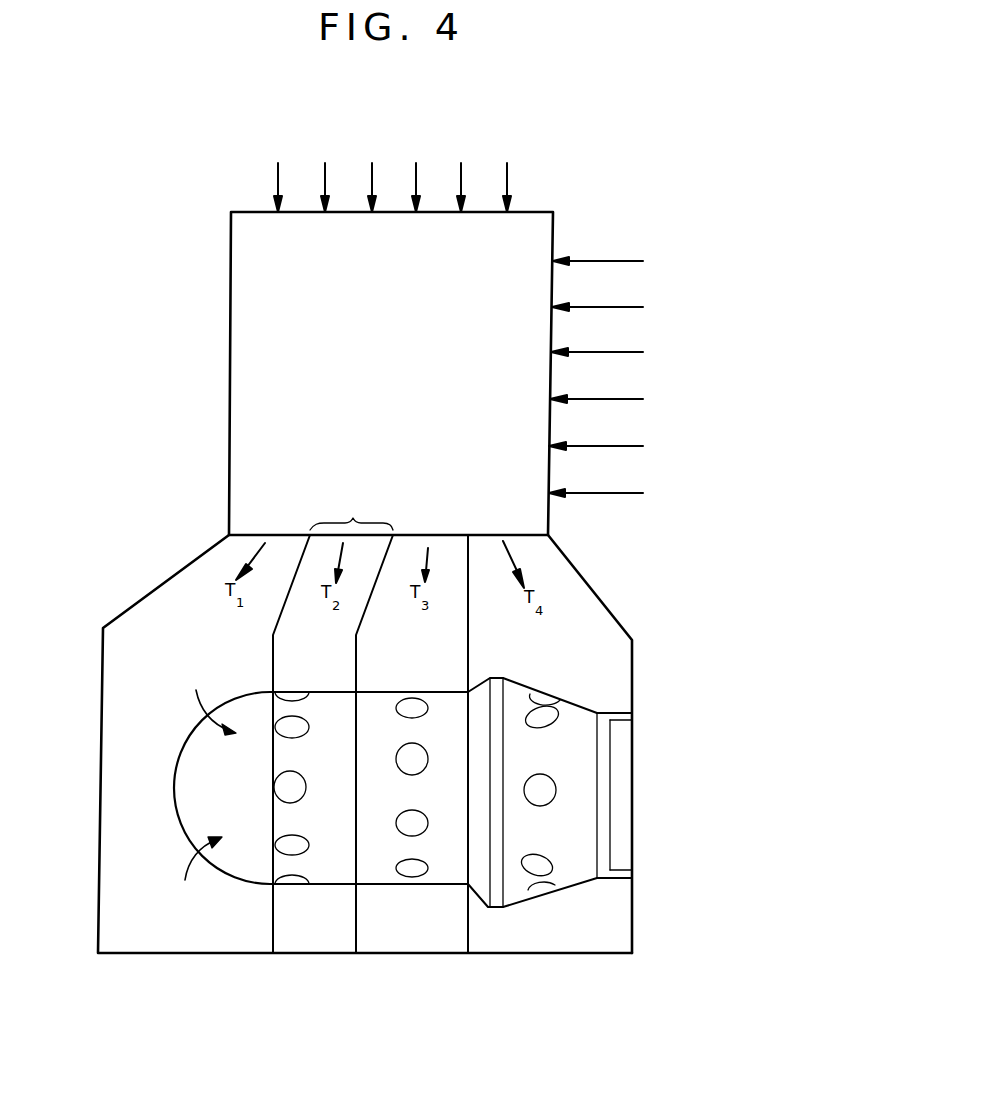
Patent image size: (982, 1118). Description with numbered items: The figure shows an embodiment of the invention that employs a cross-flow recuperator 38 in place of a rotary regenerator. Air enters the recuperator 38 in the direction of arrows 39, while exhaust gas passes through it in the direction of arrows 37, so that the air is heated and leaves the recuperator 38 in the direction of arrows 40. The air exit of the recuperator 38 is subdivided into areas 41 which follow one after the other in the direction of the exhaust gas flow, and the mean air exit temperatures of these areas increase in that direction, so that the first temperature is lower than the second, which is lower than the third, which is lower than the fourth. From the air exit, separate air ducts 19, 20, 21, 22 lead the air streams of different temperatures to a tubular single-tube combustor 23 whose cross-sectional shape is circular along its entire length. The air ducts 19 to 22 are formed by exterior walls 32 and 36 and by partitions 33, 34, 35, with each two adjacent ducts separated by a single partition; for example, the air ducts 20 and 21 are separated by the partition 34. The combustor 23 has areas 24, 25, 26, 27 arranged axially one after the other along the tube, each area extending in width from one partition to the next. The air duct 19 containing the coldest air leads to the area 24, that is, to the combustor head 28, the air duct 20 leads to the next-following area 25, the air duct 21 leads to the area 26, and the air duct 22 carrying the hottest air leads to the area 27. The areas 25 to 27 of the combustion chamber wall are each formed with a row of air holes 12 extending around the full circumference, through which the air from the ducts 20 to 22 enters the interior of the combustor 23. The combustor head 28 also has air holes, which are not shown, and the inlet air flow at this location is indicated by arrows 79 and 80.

The air holes 12 is at (290, 790).
The air duct 19 is at (208, 637).
The air duct 20 is at (331, 637).
The air duct 21 is at (418, 637).
The air duct 22 is at (580, 642).
The tubular combustor 23 is at (362, 870).
The area 24 is at (144, 764).
The area 25 is at (306, 788).
The area 26 is at (394, 739).
The area 27 is at (554, 762).
The combustor head 28 is at (192, 821).
The exterior wall 32 is at (118, 615).
The partition 33 is at (274, 668).
The partition 34 is at (357, 668).
The partition 35 is at (469, 660).
The exterior wall 36 is at (633, 662).
The arrows 37 is at (632, 352).
The cross-flow recuperator 38 is at (391, 373).
The arrows 39 is at (372, 185).
The arrows 40 is at (264, 548).
The areas 41 is at (351, 513).
The arrows 79 is at (190, 703).
The arrows 80 is at (178, 874).